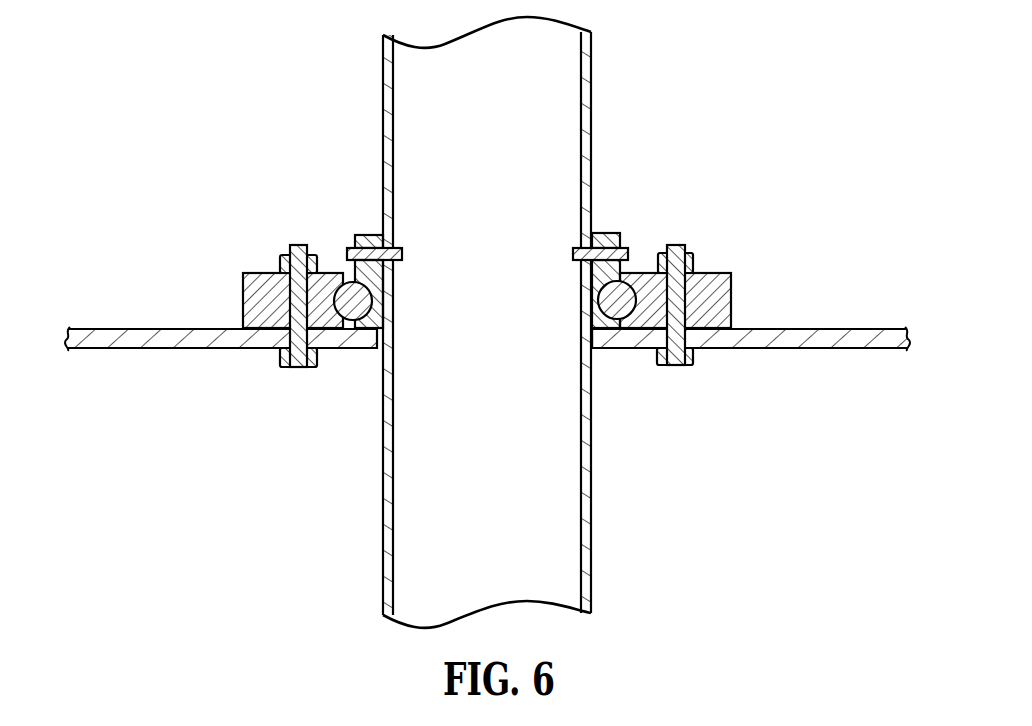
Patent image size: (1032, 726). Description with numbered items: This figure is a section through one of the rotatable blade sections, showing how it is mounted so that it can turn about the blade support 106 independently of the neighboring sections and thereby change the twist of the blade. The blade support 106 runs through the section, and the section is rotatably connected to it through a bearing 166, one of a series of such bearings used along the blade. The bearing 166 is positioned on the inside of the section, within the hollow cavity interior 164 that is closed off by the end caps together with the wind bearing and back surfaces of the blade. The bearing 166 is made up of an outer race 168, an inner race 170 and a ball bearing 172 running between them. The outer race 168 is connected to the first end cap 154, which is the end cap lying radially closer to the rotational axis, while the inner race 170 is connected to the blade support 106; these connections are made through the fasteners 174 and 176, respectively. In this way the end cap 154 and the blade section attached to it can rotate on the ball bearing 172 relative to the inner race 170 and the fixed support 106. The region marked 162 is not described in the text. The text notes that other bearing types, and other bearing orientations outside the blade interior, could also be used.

The blade support 106 is at (590, 533).
The first end cap 154 is at (785, 348).
The opening 162 is at (595, 352).
The hollow cavity interior 164 is at (675, 301).
The bearing 166 is at (617, 224).
The outer race 168 is at (713, 285).
The inner race 170 is at (578, 272).
The ball bearing 172 is at (627, 310).
The fastener 174 is at (673, 247).
The fastener 176 is at (605, 250).